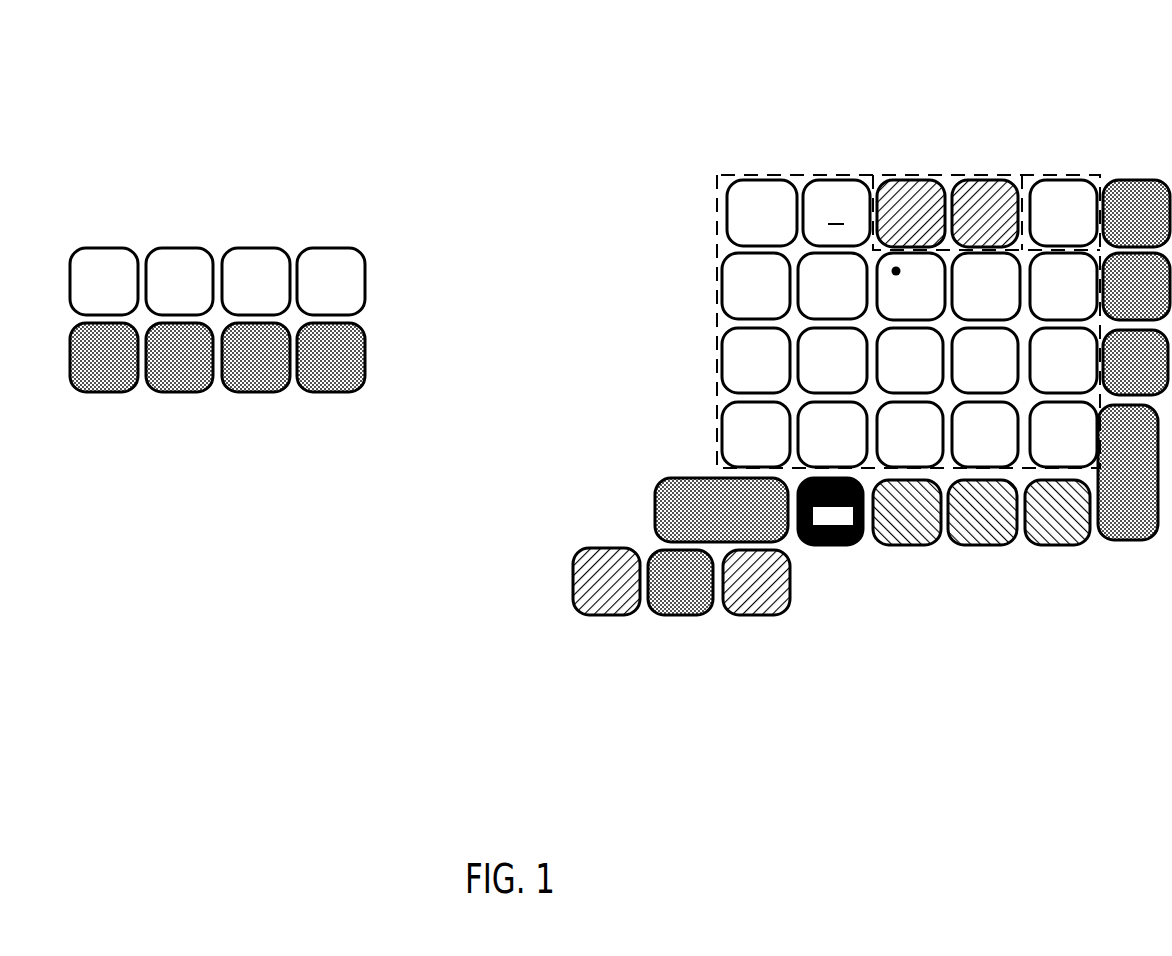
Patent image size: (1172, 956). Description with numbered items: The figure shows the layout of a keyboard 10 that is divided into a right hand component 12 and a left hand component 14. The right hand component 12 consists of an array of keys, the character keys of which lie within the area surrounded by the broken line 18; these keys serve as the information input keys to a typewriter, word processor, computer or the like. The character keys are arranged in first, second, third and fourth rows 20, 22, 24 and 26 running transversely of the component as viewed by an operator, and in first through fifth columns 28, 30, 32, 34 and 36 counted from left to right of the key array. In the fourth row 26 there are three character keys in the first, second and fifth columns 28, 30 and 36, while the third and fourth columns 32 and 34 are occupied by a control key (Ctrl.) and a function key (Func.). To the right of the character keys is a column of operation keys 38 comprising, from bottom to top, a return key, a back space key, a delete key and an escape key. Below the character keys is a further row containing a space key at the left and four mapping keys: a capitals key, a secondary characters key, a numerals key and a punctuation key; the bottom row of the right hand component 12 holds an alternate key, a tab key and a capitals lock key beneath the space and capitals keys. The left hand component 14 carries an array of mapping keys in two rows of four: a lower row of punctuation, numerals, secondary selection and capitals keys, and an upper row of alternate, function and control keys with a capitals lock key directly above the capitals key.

The keyboard 10 is at (486, 103).
The right hand component 12 is at (858, 86).
The left hand component 14 is at (157, 110).
The broken line 18 is at (1032, 176).
The first row 20 is at (710, 435).
The second row 22 is at (710, 360).
The third row 24 is at (712, 287).
The fourth row 26 is at (710, 215).
The first column 28 is at (762, 172).
The second column 30 is at (840, 172).
The third column 32 is at (908, 172).
The fourth column 34 is at (987, 172).
The fifth column 36 is at (1060, 172).
The column of operation keys 38 is at (1138, 172).